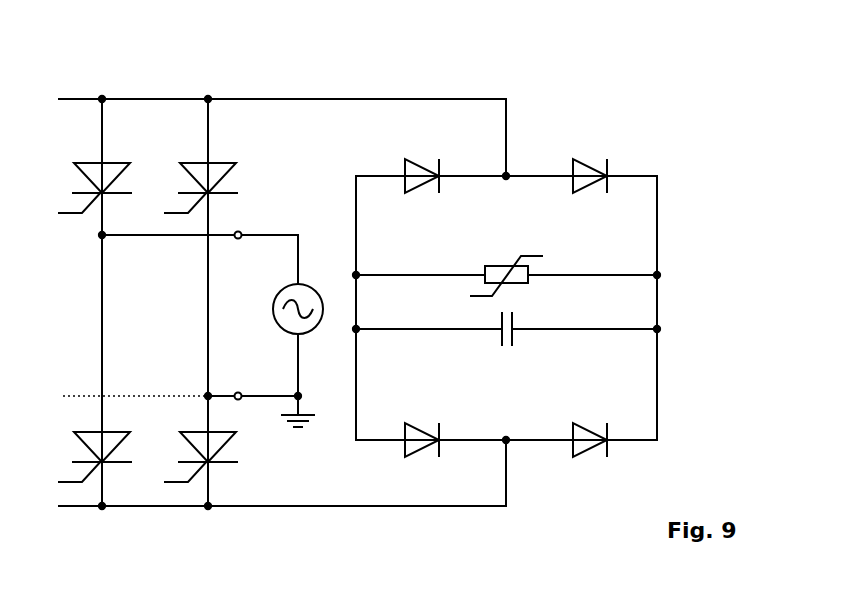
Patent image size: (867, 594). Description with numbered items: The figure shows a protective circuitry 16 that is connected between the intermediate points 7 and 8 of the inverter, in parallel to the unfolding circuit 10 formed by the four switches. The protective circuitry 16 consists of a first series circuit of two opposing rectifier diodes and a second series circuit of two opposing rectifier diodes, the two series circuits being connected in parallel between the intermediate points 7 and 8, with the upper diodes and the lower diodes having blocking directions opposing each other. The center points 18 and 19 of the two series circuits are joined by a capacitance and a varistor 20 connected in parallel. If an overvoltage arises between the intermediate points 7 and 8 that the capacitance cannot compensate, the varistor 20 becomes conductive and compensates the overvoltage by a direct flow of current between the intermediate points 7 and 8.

The intermediate point 7 is at (62, 507).
The intermediate point 8 is at (80, 97).
The thyristor bridge converter 10 is at (190, 92).
The protective circuitry 16 is at (568, 135).
The center point 18 is at (356, 330).
The center point 19 is at (657, 329).
The varistor 20 is at (540, 248).